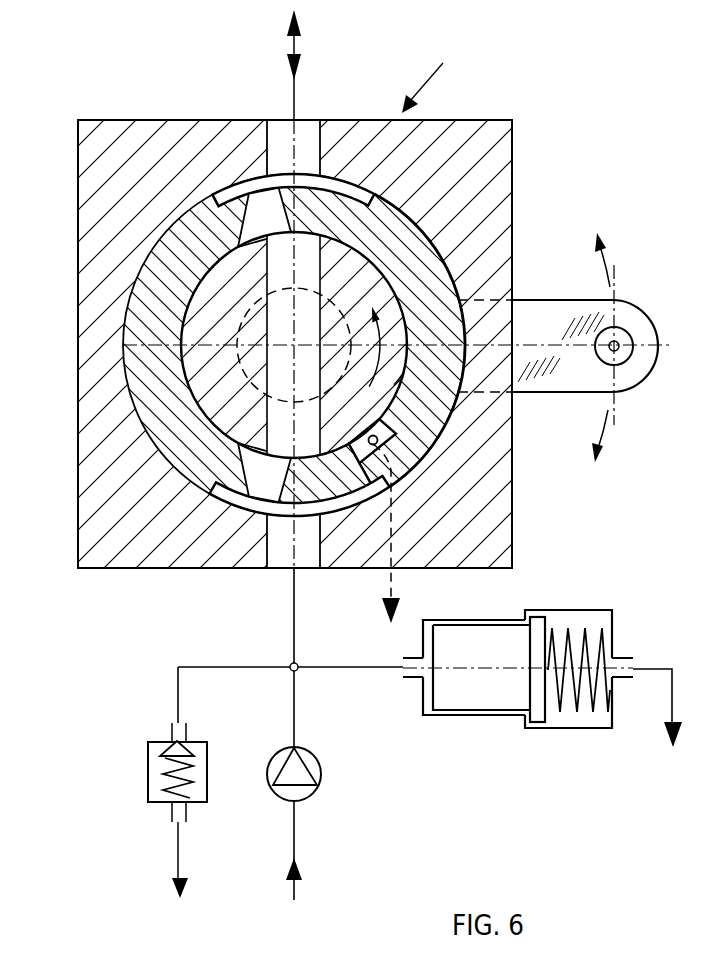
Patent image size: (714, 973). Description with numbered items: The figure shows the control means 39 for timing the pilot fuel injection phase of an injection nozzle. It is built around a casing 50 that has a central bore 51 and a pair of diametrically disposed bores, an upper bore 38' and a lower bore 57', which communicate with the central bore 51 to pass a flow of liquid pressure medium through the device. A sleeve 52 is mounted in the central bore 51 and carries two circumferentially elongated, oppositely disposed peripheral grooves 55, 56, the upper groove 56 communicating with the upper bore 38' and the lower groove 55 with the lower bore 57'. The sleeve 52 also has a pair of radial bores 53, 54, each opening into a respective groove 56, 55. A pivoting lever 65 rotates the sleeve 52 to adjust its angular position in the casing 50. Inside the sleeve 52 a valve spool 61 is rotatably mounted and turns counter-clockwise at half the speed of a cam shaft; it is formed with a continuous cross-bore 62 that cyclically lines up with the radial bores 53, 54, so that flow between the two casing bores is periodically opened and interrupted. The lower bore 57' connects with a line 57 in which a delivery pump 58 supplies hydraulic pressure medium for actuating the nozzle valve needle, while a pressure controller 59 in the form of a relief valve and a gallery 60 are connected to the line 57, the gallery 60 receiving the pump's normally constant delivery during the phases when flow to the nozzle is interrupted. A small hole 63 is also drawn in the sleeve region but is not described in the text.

The upper bore 38' is at (265, 93).
The control means 39 is at (432, 75).
The casing 50 is at (495, 140).
The central bore 51 is at (135, 272).
The sleeve 52 is at (415, 243).
The radial bore 53 is at (283, 217).
The radial bore 54 is at (282, 491).
The peripheral groove 55 is at (232, 502).
The peripheral groove 56 is at (342, 185).
The line 57 is at (290, 734).
The lower bore 57' is at (333, 535).
The delivery pump 58 is at (317, 768).
The pressure controller 59 is at (155, 763).
The gallery 60 is at (430, 708).
The valve spool 61 is at (392, 390).
The cross-bore 62 is at (318, 344).
The control hole 63 is at (392, 436).
The pivoting lever 65 is at (637, 375).